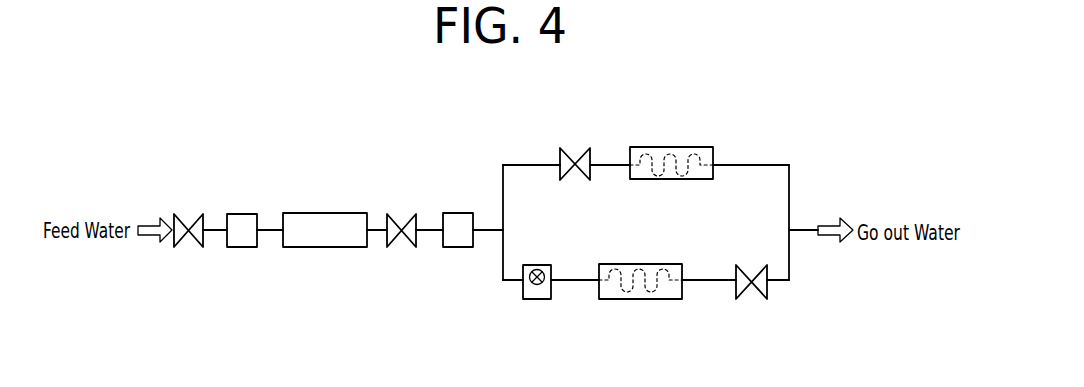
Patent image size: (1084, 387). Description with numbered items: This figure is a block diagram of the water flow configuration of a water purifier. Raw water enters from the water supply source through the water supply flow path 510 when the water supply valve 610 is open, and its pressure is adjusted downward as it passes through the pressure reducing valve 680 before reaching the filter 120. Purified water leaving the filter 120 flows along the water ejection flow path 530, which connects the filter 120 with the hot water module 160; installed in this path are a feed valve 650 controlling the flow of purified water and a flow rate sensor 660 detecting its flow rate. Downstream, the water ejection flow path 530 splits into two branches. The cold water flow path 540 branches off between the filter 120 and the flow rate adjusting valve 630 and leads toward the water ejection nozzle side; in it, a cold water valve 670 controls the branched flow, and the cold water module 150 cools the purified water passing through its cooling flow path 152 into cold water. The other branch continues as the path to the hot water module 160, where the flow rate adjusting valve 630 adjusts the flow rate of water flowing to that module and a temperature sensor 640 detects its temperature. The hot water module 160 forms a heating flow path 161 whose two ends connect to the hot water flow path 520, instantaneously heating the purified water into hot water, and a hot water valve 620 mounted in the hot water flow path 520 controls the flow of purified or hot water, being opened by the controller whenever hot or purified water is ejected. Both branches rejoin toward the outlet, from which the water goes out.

The filter 120 is at (326, 212).
The cold water module 150 is at (657, 148).
The cooling flow path 152 is at (700, 150).
The hot water module 160 is at (649, 264).
The heating flow path 161 is at (627, 289).
The water supply flow path 510 is at (268, 228).
The hot water flow path 520 is at (505, 282).
The water ejection flow path 530 is at (429, 228).
The cold water flow path 540 is at (528, 164).
The water supply valve 610 is at (196, 213).
The hot water valve 620 is at (753, 285).
The flow rate adjusting valve 630 is at (537, 300).
The temperature sensor 640 is at (540, 265).
The feed valve 650 is at (405, 213).
The flow rate sensor 660 is at (459, 212).
The cold water valve 670 is at (581, 148).
The pressure reducing valve 680 is at (242, 213).